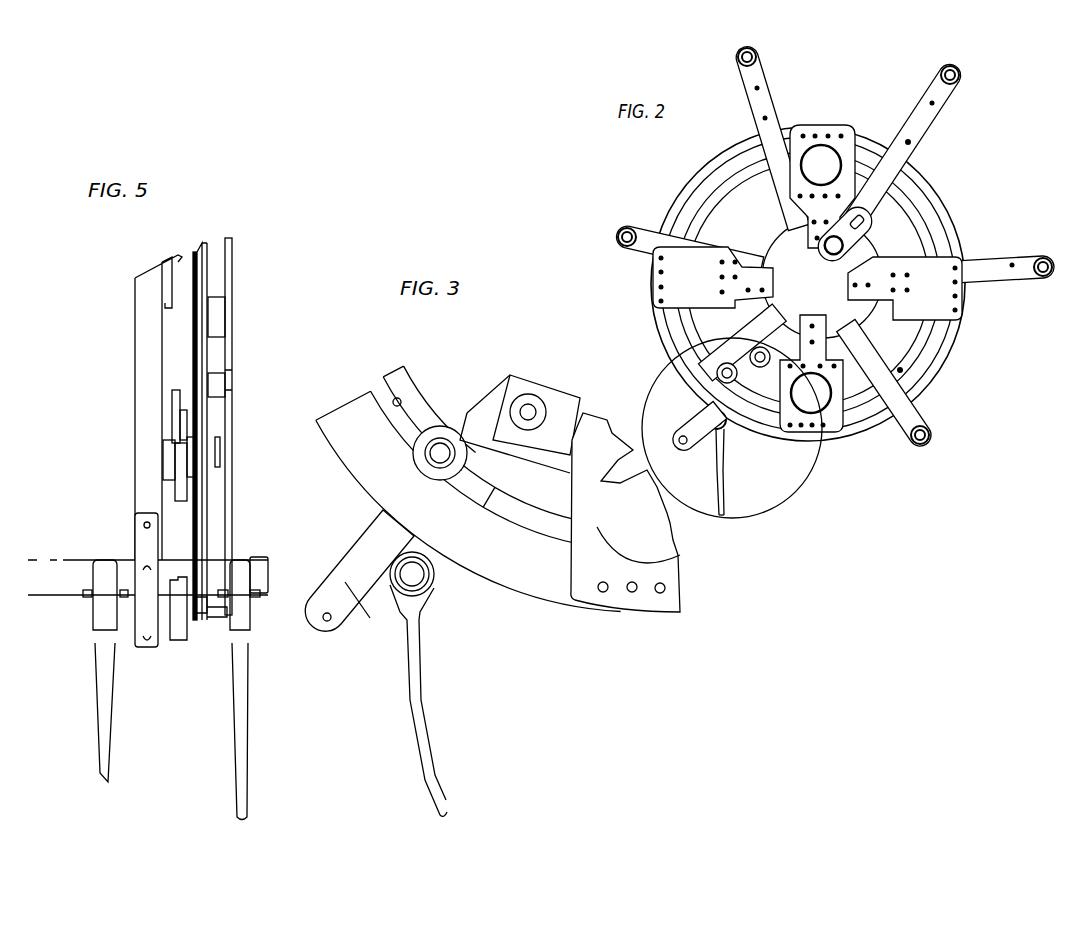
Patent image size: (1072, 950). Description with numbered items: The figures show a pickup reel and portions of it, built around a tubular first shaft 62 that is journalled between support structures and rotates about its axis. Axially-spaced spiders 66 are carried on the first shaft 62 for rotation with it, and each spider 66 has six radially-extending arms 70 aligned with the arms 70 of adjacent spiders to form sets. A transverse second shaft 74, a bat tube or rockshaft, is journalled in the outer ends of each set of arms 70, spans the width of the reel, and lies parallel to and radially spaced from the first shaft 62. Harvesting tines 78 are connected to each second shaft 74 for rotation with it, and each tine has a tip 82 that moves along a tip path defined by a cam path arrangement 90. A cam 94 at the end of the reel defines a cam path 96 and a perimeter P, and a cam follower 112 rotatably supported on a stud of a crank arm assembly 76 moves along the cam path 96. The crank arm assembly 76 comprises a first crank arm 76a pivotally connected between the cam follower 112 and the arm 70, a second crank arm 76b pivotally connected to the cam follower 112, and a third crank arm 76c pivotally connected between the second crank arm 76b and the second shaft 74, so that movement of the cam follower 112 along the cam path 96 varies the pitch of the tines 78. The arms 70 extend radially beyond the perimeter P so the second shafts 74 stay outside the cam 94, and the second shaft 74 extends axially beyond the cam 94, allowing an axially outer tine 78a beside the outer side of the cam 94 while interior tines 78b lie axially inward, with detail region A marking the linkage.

In FIG. 2, the first shaft 62 is at (828, 250).
In FIG. 2, the spider 66 is at (912, 97).
In FIG. 5, the radially-extending arm 70 is at (140, 327).
In FIG. 3, the radially-extending arm 70 is at (553, 397).
In FIG. 2, the radially-extending arm 70 is at (775, 110).
In FIG. 5, the second shaft 74 is at (67, 560).
In FIG. 3, the second shaft 74 is at (440, 588).
In FIG. 2, the second shaft 74 is at (757, 57).
In FIG. 5, the crank arm assembly 76 is at (147, 433).
In FIG. 2, the crank arm assembly 76 is at (673, 428).
In FIG. 5, the first crank arm 76a is at (170, 392).
In FIG. 3, the first crank arm 76a is at (492, 413).
In FIG. 2, the first crank arm 76a is at (847, 360).
In FIG. 5, the second crank arm 76b is at (172, 472).
In FIG. 3, the second crank arm 76b is at (350, 557).
In FIG. 2, the second crank arm 76b is at (697, 411).
In FIG. 5, the third crank arm 76c is at (177, 643).
In FIG. 3, the third crank arm 76c is at (341, 627).
In FIG. 2, the third crank arm 76c is at (690, 447).
In FIG. 3, the harvesting tine 78 is at (625, 512).
In FIG. 5, the axially outer tine 78a is at (247, 743).
In FIG. 3, the axially outer tine 78a is at (422, 685).
In FIG. 2, the axially outer tine 78a is at (723, 487).
In FIG. 5, the interior tine 78b is at (107, 718).
In FIG. 3, the tip 82 is at (447, 812).
In FIG. 2, the tip 82 is at (720, 520).
In FIG. 3, the cam path arrangement 90 is at (392, 480).
In FIG. 5, the cam 94 is at (227, 313).
In FIG. 3, the cam 94 is at (355, 448).
In FIG. 2, the cam 94 is at (672, 330).
In FIG. 5, the cam path 96 is at (209, 431).
In FIG. 3, the cam path 96 is at (402, 398).
In FIG. 2, the cam path 96 is at (703, 190).
In FIG. 5, the cam follower 112 is at (213, 430).
In FIG. 3, the cam follower 112 is at (438, 427).
In FIG. 2, the cam follower 112 is at (762, 402).
In FIG. 2, the detail region A is at (800, 478).
In FIG. 2, the perimeter P is at (933, 185).